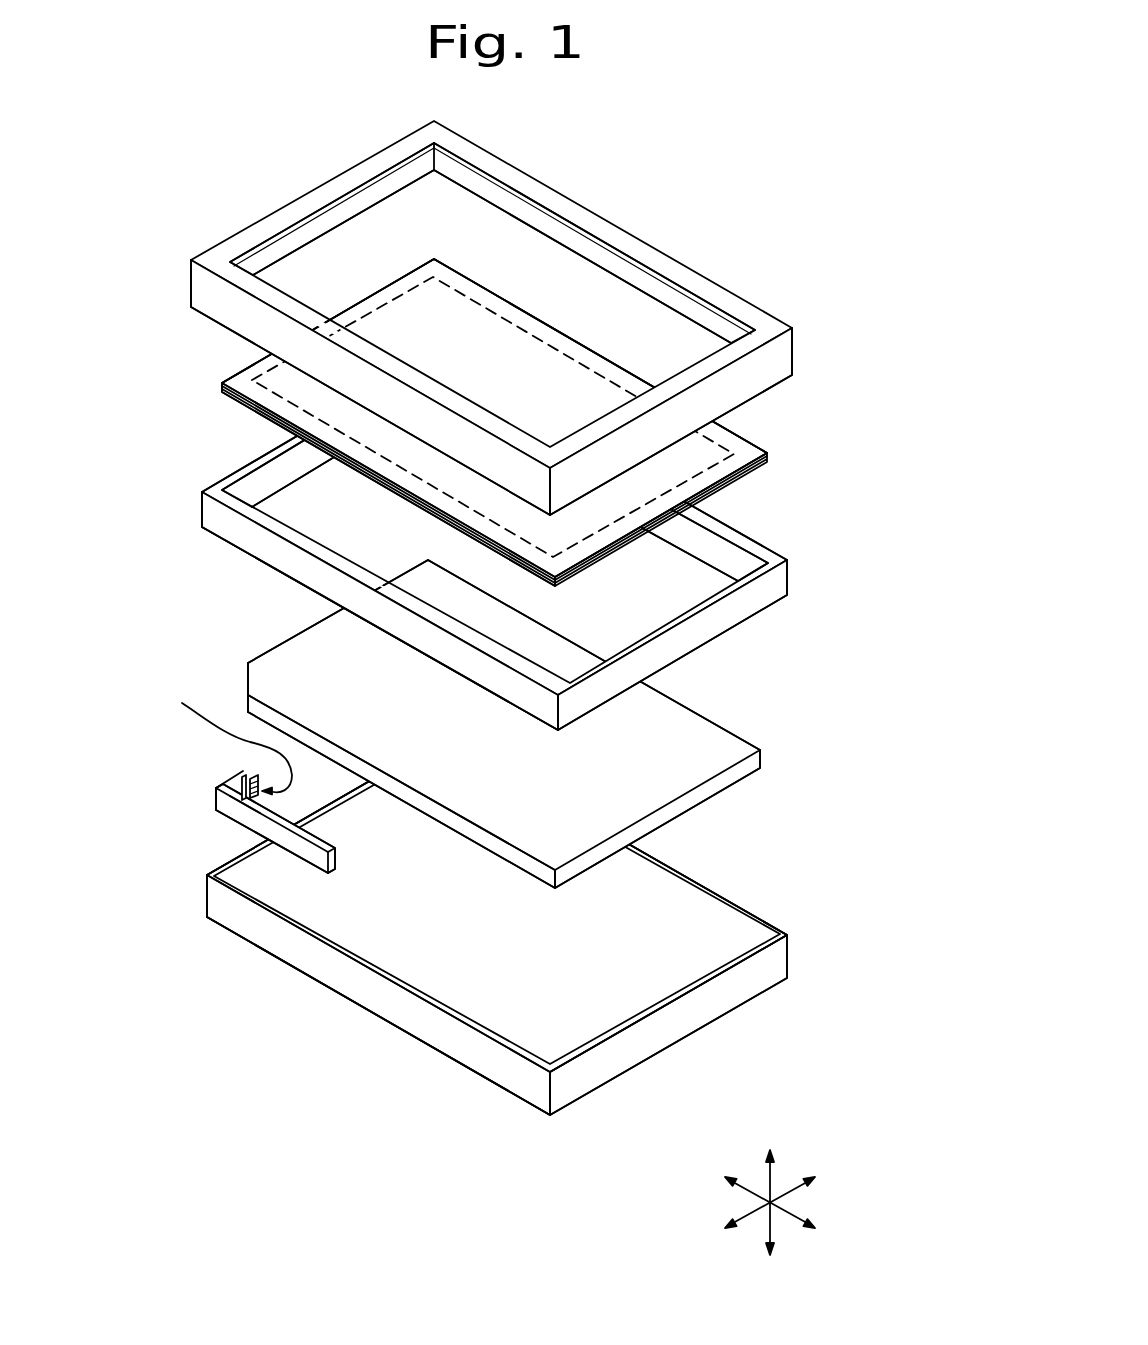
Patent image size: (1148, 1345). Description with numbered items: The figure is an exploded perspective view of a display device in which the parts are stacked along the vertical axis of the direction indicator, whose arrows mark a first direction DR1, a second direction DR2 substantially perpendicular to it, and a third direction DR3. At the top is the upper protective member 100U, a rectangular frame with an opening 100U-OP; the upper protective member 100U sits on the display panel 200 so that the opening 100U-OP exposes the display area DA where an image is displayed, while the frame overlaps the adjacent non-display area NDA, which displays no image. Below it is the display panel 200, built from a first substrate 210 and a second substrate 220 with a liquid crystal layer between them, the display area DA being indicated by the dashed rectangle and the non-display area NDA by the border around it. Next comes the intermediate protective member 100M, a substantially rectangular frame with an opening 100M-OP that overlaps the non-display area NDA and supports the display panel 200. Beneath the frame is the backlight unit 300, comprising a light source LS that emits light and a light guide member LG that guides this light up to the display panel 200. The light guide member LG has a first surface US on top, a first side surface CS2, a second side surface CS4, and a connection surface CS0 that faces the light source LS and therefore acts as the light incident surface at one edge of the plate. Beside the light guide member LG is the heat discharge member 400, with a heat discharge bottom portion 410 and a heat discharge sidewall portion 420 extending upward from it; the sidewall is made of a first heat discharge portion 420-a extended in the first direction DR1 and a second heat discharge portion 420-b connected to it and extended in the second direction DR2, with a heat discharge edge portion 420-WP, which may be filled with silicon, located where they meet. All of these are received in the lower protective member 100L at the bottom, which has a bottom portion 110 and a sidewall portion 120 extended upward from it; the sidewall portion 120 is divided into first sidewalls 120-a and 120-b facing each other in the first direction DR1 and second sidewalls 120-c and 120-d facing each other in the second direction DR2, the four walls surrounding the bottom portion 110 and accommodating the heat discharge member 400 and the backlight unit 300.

The upper protective member 100U is at (538, 318).
The opening 100U-OP is at (542, 278).
The display panel 200 is at (524, 422).
The first substrate 210 is at (768, 462).
The second substrate 220 is at (752, 452).
The display area DA is at (253, 366).
The non-display area NDA is at (222, 385).
The intermediate protective member 100M is at (560, 543).
The opening 100M-OP is at (680, 578).
The backlight unit 300 is at (475, 736).
The light guide member LG is at (508, 736).
The light source LS is at (218, 742).
The connection surface CS0 is at (255, 678).
The first surface US is at (716, 748).
The first side surface CS2 is at (722, 780).
The second side surface CS4 is at (455, 822).
The heat discharge member 400 is at (206, 809).
The heat discharge bottom portion 410 is at (285, 855).
The heat discharge sidewall portion 420 is at (185, 792).
The first heat discharge portion 420-a is at (270, 770).
The second heat discharge portion 420-b is at (248, 820).
The heat discharge edge portion 420-WP is at (237, 787).
The lower protective member 100L is at (539, 939).
The bottom portion 110 is at (537, 1027).
The sidewall portion 120 is at (539, 930).
The first sidewall 120-a is at (248, 870).
The first sidewall 120-b is at (720, 978).
The second sidewall 120-c is at (740, 930).
The second sidewall 120-d is at (348, 978).
The first direction DR1 is at (790, 1212).
The second direction DR2 is at (790, 1191).
The third direction DR3 is at (770, 1190).